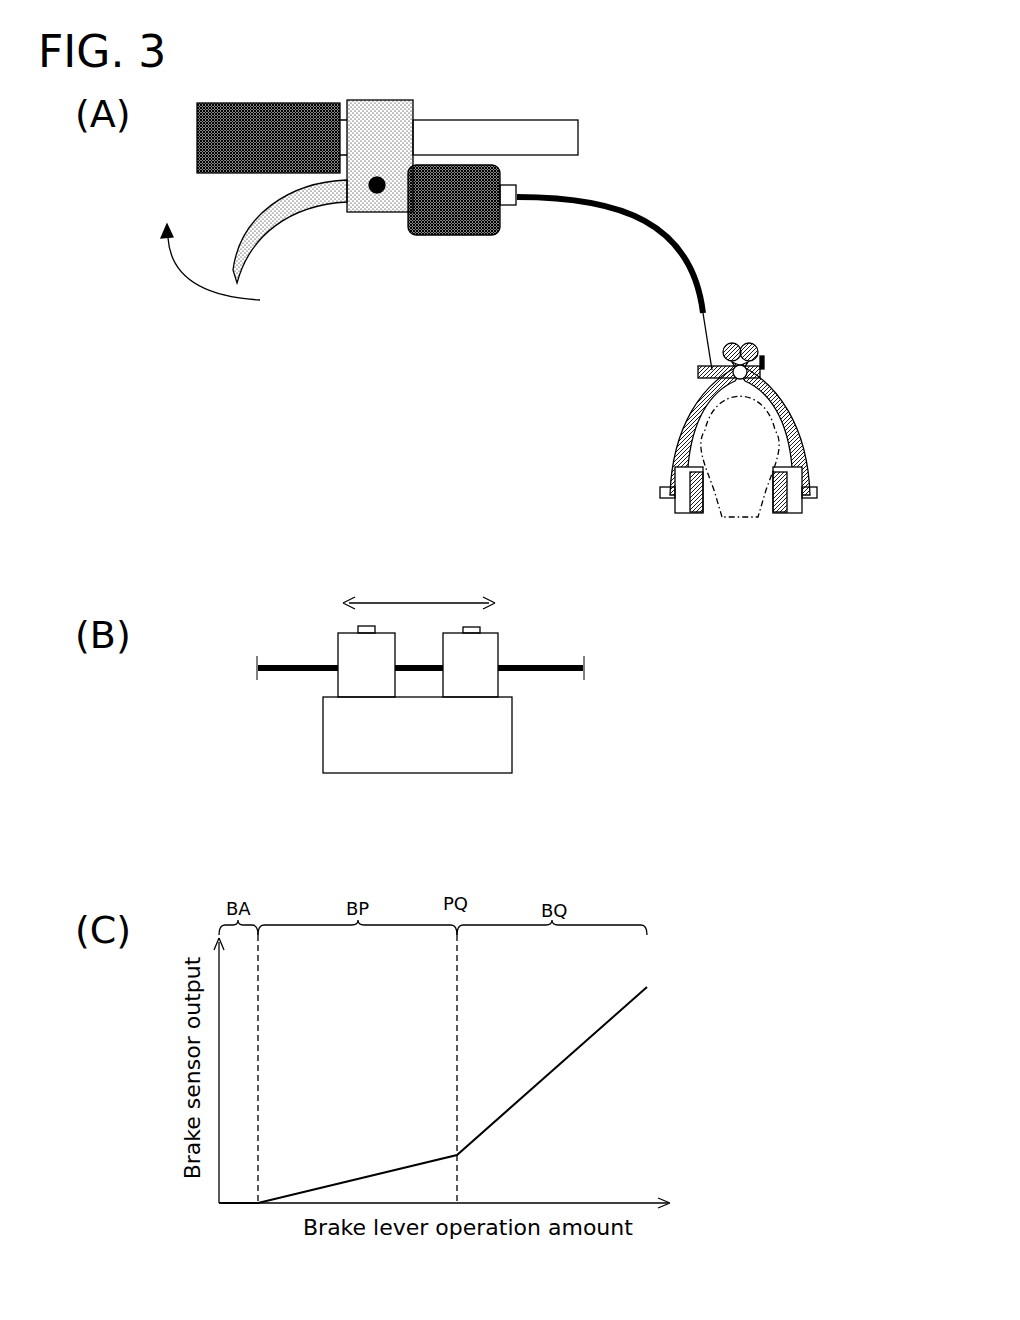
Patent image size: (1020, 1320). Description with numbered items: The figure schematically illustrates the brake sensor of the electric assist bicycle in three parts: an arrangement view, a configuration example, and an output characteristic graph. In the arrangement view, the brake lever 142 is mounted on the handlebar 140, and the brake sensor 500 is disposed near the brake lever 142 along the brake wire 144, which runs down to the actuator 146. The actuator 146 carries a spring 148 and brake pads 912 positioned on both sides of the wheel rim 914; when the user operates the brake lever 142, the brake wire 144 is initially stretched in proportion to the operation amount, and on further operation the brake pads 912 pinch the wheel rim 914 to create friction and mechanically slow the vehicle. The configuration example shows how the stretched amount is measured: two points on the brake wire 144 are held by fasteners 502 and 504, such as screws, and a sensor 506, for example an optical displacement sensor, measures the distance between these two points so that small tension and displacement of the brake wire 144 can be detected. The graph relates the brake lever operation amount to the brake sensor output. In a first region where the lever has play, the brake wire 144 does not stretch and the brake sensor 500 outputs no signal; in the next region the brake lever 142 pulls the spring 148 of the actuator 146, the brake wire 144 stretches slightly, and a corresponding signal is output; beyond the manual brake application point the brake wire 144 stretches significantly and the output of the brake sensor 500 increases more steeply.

The handlebar 140 is at (272, 103).
The brake lever 142 is at (285, 223).
The brake wire 144 is at (635, 207).
The actuator 146 is at (680, 391).
The spring 148 is at (742, 337).
The brake sensor 500 is at (427, 237).
The fastener 502 is at (338, 685).
The fastener 504 is at (498, 685).
The sensor 506 is at (437, 773).
The brake pads 912 is at (697, 515).
The wheel rim 914 is at (765, 493).